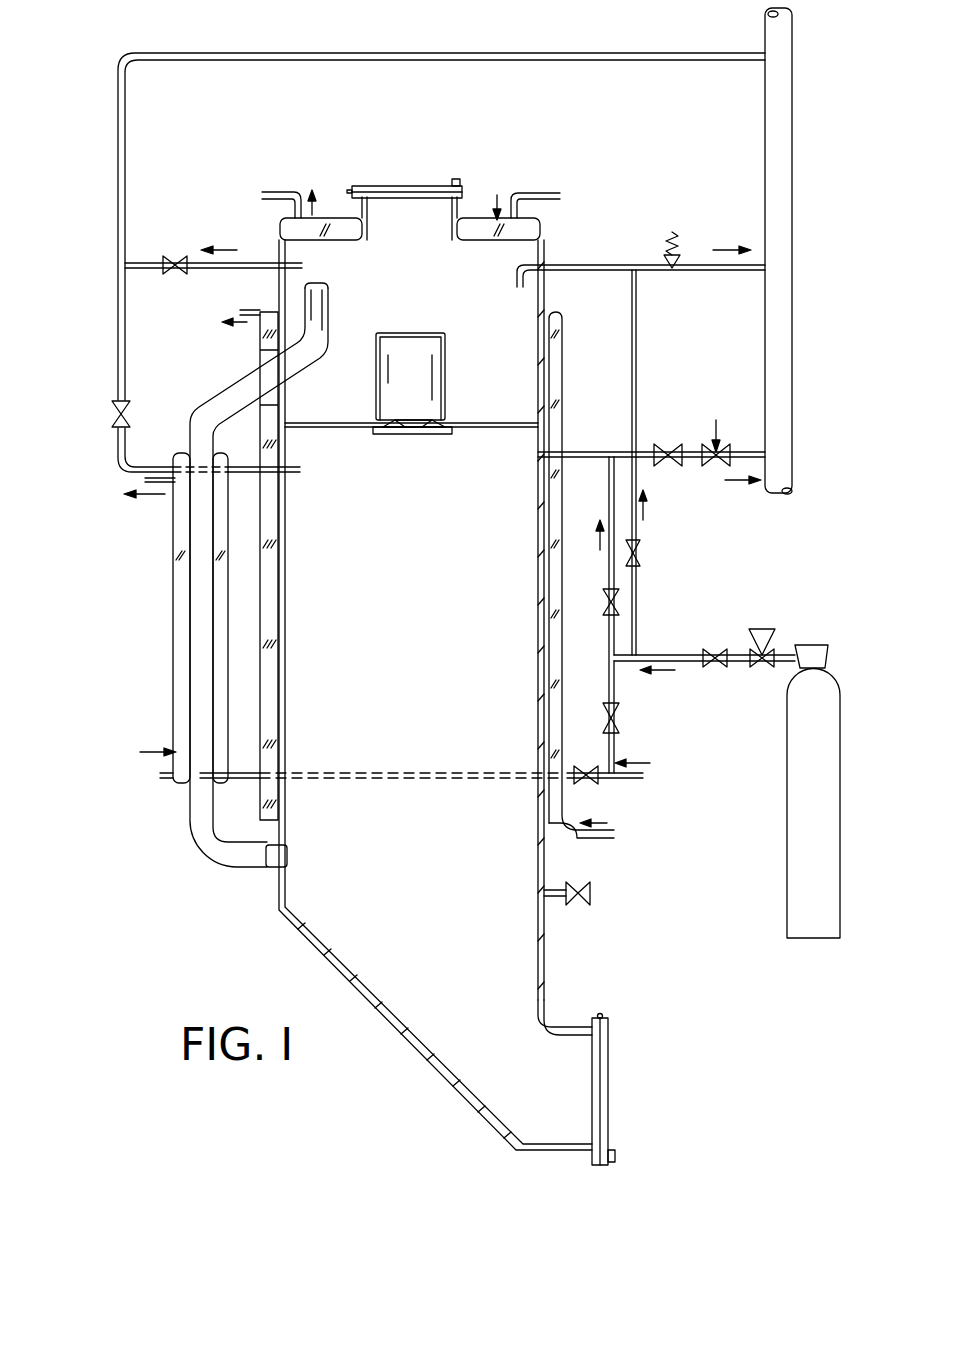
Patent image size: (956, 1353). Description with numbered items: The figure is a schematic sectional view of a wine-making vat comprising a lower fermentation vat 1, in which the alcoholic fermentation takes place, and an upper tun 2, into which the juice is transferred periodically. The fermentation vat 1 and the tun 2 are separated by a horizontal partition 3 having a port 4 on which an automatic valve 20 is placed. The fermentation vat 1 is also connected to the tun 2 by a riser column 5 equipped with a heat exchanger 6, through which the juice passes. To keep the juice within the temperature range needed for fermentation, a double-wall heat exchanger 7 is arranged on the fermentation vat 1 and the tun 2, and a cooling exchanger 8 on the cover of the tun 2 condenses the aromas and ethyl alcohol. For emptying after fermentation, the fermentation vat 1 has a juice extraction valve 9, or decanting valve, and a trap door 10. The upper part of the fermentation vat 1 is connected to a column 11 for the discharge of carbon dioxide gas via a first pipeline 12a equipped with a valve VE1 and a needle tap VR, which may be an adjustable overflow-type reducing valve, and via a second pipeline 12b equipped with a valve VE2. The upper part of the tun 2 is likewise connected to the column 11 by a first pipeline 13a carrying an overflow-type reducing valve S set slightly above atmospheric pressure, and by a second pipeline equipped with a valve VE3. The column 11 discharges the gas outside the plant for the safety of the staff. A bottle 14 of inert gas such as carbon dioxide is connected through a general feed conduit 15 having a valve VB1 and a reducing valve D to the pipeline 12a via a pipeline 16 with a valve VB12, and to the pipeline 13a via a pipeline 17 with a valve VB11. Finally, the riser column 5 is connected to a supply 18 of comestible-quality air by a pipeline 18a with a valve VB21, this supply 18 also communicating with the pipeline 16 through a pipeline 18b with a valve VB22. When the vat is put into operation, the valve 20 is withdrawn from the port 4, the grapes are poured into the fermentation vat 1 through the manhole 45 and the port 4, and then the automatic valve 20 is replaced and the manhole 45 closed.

The fermentation vat 1 is at (545, 985).
The tun 2 is at (540, 286).
The horizontal partition 3 is at (498, 424).
The port 4 is at (406, 435).
The riser column 5 is at (193, 820).
The heat exchanger 6 is at (172, 638).
The heat exchanger 7 is at (558, 373).
The cooling exchanger 8 is at (485, 215).
The juice extraction valve 9 is at (596, 885).
The trap door 10 is at (610, 1093).
The column 11 is at (795, 312).
The first pipeline 12a is at (615, 450).
The second pipeline 12b is at (124, 447).
The first pipeline 13a is at (594, 264).
The bottle of inert gas 14 is at (827, 828).
The general feed conduit 15 is at (670, 655).
The pipeline 16 is at (602, 498).
The pipeline 17 is at (637, 482).
The supply of air 18 is at (630, 782).
The pipeline 18a is at (242, 781).
The pipeline 18b is at (137, 258).
The automatic valve 20 is at (452, 384).
The manhole 45 is at (400, 186).
The reducing valve S is at (672, 236).
The reducing valve D is at (761, 634).
The needle tap VR is at (711, 432).
The valve VE1 is at (665, 443).
The valve VE2 is at (142, 414).
The valve VE3 is at (176, 253).
The valve VB1 is at (724, 673).
The valve VB11 is at (656, 553).
The valve VB12 is at (592, 604).
The valve VB21 is at (599, 789).
The valve VB22 is at (639, 722).